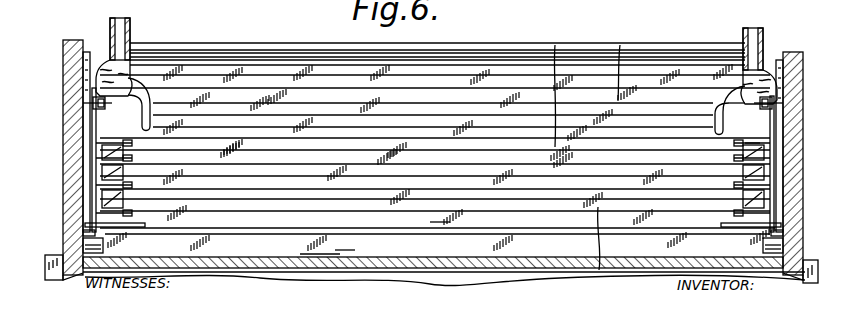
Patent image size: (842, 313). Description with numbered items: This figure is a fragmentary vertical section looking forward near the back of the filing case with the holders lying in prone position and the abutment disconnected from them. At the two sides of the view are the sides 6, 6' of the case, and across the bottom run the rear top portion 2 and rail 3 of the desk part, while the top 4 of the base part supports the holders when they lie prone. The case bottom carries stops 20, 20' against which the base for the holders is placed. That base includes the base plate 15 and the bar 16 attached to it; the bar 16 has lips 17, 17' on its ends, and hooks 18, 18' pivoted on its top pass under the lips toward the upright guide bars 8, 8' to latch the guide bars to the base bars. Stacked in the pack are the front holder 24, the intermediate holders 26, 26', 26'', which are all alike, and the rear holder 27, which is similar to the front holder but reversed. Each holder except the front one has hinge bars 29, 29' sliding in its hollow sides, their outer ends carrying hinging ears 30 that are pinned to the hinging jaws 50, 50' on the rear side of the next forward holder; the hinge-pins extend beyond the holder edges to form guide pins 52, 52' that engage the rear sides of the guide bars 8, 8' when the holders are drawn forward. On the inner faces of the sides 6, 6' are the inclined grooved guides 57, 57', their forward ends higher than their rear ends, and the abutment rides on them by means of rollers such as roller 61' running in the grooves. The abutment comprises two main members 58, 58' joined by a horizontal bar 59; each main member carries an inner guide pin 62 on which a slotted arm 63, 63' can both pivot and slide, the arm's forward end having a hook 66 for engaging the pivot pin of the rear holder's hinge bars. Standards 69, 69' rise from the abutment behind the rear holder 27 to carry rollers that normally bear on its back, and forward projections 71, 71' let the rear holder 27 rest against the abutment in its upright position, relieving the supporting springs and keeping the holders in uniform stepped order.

The rear top portion 2 is at (520, 266).
The rail 3 is at (440, 282).
The top 4 is at (53, 280).
The side 6 is at (796, 150).
The side 6' is at (70, 142).
The guide bar 8 is at (797, 164).
The guide bar 8' is at (64, 160).
The base plate 15 is at (322, 254).
The bar 16 is at (345, 246).
The lip 17 is at (776, 213).
The lip 17' is at (88, 210).
The hook 18 is at (801, 232).
The hook 18' is at (62, 225).
The stop 20 is at (802, 286).
The stop 20' is at (119, 243).
The front holder 24 is at (438, 222).
The intermediate holder 26 is at (594, 258).
The intermediate holder 26' is at (557, 82).
The intermediate holder 26'' is at (625, 59).
The rear holder 27 is at (295, 72).
The hinge bar 29 is at (713, 179).
The hinge bar 29' is at (164, 177).
The hinging ear 30 is at (197, 243).
The hinging jaw 50 is at (712, 203).
The hinging jaw 50' is at (163, 202).
The guide pin 52 is at (783, 178).
The guide pin 52' is at (81, 178).
The grooved guide 57 is at (804, 146).
The grooved guide 57' is at (101, 116).
The main member 58 is at (766, 56).
The main member 58' is at (82, 77).
The horizontal bar 59 is at (210, 50).
The roller 61' is at (434, 104).
The guide pin 62 is at (740, 125).
The arm 63 is at (706, 154).
The arm 63' is at (154, 149).
The hook 66 is at (740, 143).
The standard 69 is at (737, 39).
The standard 69' is at (141, 31).
The arm 71 is at (707, 79).
The arm 71' is at (157, 75).